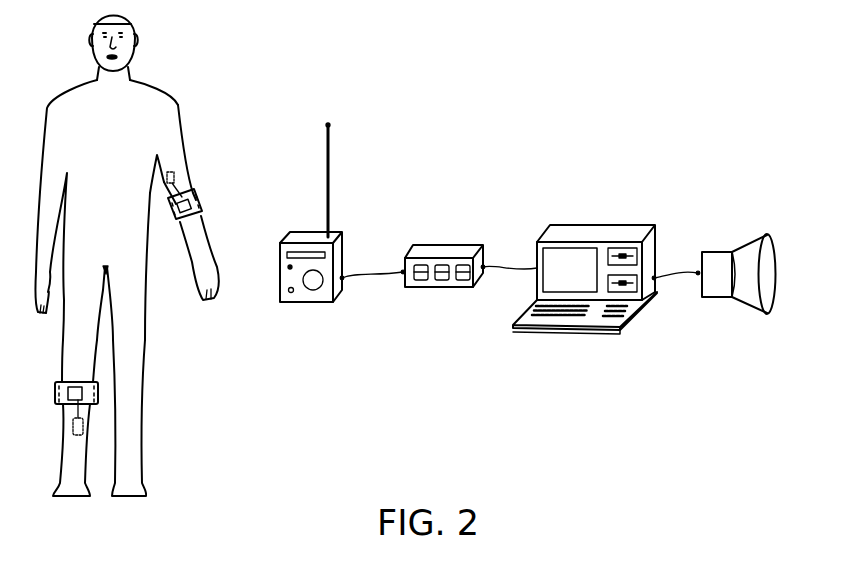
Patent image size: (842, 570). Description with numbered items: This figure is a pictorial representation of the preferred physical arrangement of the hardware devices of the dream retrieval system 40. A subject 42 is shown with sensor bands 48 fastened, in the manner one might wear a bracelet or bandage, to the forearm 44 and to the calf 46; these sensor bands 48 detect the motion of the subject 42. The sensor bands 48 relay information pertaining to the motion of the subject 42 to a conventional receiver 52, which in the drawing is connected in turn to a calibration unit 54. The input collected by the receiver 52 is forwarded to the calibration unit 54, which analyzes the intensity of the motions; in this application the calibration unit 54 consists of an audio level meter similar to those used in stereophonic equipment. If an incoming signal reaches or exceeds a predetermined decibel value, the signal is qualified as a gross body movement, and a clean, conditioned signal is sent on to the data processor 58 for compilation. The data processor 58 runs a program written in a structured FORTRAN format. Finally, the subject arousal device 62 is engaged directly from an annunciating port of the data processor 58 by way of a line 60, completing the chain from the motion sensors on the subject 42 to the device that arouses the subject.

The dream retrieval system 40 is at (447, 406).
The subject 42 is at (178, 104).
The forearm 44 is at (202, 229).
The calf 46 is at (67, 457).
The sensor bands 48 is at (195, 196).
The receiver 52 is at (303, 302).
The calibration unit 54 is at (437, 288).
The data processor 58 is at (568, 333).
The line 60 is at (680, 276).
The subject arousal device 62 is at (767, 314).